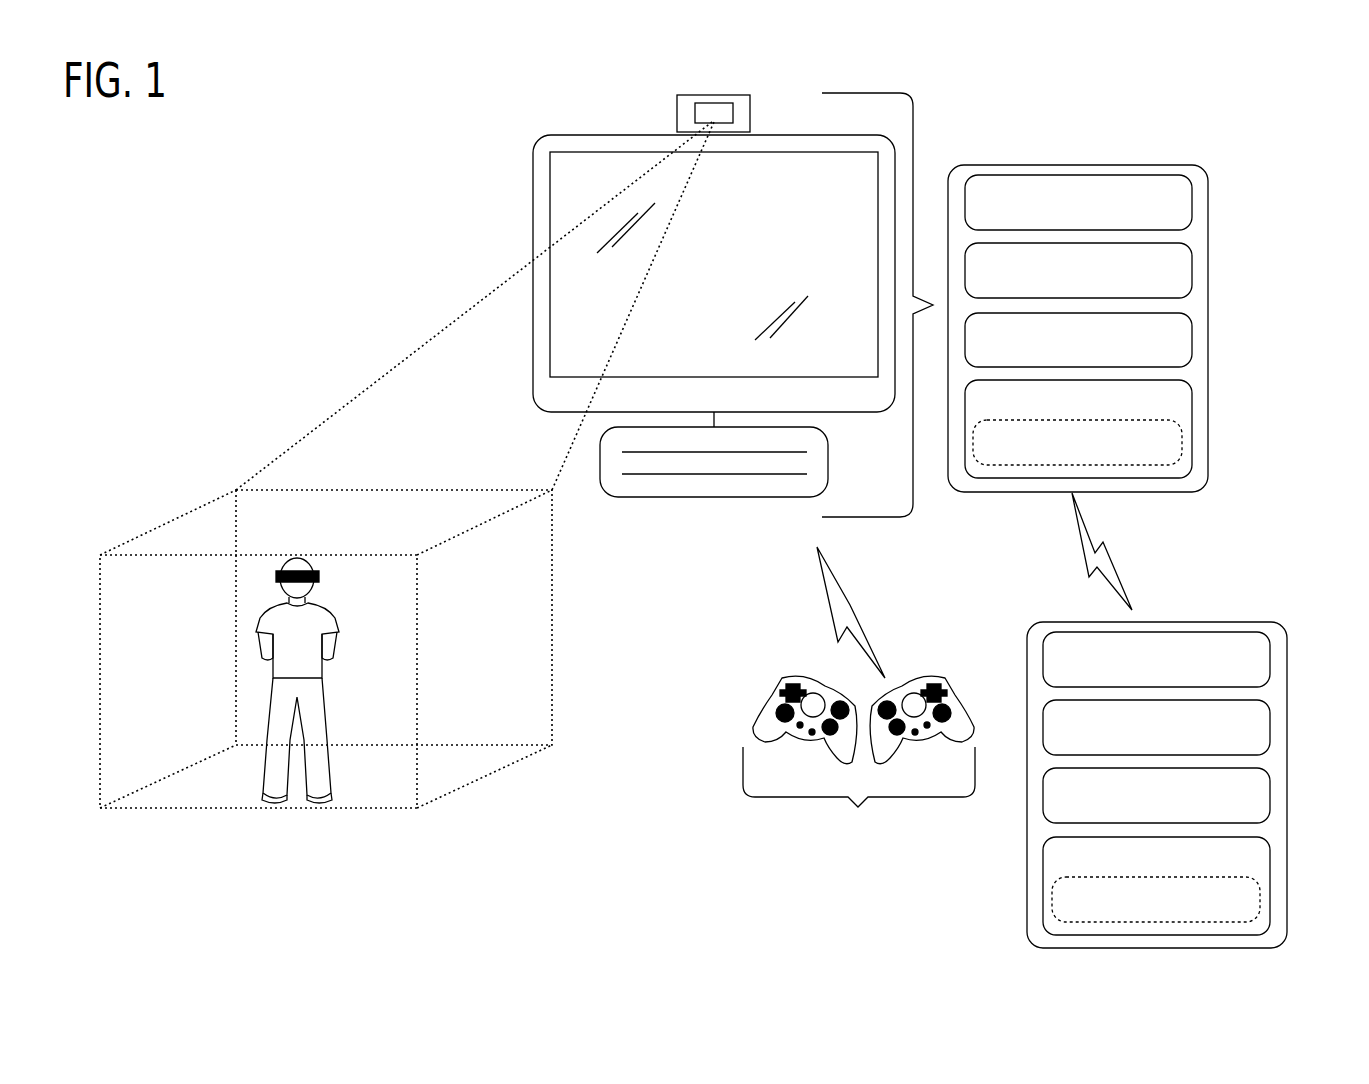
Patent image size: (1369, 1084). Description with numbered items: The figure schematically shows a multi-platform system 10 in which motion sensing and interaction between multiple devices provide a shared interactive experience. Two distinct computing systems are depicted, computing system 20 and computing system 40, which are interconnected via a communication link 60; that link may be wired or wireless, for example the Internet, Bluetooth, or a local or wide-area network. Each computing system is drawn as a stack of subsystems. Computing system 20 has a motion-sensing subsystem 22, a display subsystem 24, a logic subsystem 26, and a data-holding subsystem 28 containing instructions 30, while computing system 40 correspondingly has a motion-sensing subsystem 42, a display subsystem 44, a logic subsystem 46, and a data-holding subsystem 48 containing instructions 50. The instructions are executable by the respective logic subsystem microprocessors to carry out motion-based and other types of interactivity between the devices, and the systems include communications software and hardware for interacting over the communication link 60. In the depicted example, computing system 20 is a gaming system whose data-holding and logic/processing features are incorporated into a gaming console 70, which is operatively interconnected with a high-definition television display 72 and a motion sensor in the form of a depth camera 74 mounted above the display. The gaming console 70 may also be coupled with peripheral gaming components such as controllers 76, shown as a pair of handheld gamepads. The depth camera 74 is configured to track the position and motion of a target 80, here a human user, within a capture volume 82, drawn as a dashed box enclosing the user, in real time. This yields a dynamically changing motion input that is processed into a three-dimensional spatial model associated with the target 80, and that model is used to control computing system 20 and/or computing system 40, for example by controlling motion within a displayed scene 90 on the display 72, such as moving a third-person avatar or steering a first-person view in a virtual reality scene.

The multi-platform system 10 is at (1242, 138).
The computing system 20 is at (1107, 328).
The motion-sensing subsystem 22 is at (1186, 215).
The display subsystem 24 is at (1134, 284).
The logic subsystem 26 is at (1123, 352).
The data-holding subsystem 28 is at (1168, 414).
The instructions 30 is at (1167, 455).
The computing system 40 is at (1184, 785).
The motion-sensing subsystem 42 is at (1266, 672).
The display subsystem 44 is at (1214, 740).
The logic subsystem 46 is at (1201, 808).
The data-holding subsystem 48 is at (1246, 870).
The instructions 50 is at (1245, 912).
The communication link 60 is at (1113, 557).
The gaming console 70 is at (710, 497).
The high-definition television display 72 is at (533, 217).
The depth camera 74 is at (677, 98).
The controllers 76 is at (859, 694).
The target 80 is at (307, 657).
The capture volume 82 is at (190, 532).
The displayed scene 90 is at (825, 257).